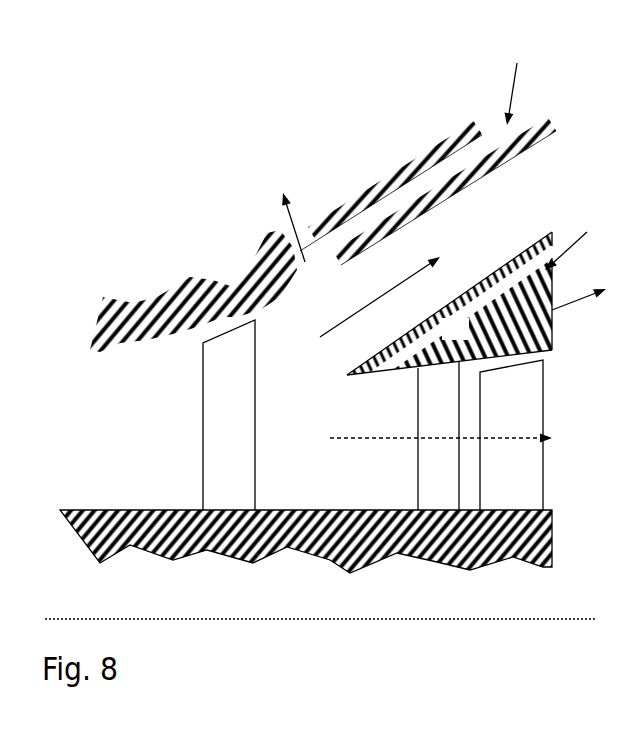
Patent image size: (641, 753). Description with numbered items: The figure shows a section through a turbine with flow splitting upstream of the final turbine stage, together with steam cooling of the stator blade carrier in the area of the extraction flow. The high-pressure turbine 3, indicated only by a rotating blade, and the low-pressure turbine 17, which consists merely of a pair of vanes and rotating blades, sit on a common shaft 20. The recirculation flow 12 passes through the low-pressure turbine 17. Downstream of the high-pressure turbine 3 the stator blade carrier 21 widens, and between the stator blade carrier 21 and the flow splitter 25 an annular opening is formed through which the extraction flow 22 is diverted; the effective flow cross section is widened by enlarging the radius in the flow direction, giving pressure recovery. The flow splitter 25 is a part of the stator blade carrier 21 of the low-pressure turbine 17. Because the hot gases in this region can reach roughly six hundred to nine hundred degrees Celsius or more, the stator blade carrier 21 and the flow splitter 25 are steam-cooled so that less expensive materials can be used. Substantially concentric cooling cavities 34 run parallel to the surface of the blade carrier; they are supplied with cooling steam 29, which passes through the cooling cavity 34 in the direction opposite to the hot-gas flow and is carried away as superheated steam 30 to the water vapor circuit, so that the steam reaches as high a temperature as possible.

The high-pressure turbine 3 is at (303, 105).
The low-pressure turbine 17 is at (540, 103).
The stator blade carrier 21 is at (265, 267).
The cooling cavities 34 is at (515, 283).
The flow splitter 25 is at (449, 303).
The extraction flow 22 is at (396, 281).
The superheated steam 30 is at (456, 237).
The cooling steam 29 is at (562, 153).
The recirculation flow 12 is at (377, 415).
The common shaft 20 is at (296, 553).